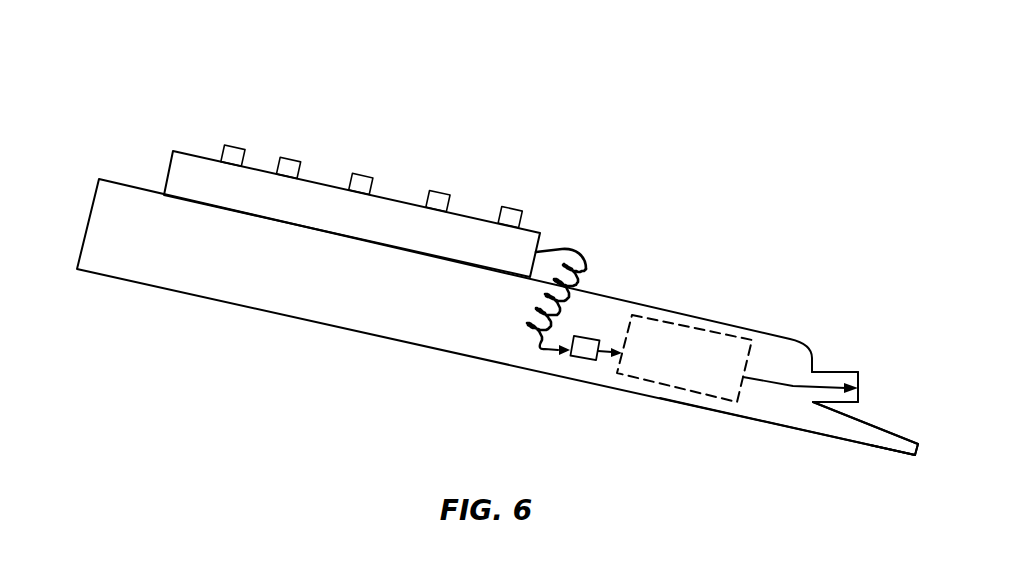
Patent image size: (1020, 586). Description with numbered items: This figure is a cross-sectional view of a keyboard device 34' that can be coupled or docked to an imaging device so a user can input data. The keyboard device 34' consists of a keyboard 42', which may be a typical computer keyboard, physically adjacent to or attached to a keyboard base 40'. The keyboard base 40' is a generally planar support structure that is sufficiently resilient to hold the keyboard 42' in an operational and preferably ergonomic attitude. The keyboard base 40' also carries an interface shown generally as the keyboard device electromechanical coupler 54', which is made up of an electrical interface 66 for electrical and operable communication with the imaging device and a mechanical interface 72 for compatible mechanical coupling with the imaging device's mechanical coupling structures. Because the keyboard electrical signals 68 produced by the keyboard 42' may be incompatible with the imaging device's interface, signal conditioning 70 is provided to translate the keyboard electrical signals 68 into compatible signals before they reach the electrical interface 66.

The keyboard device 34' is at (478, 283).
The keyboard base 40' is at (478, 289).
The keyboard 42' is at (352, 181).
The keyboard electrical signals 68 is at (587, 265).
The signal conditioning 70 is at (673, 388).
The electrical interface 66 is at (842, 372).
The keyboard device electromechanical coupler 54' is at (787, 462).
The mechanical interface 72 is at (863, 440).